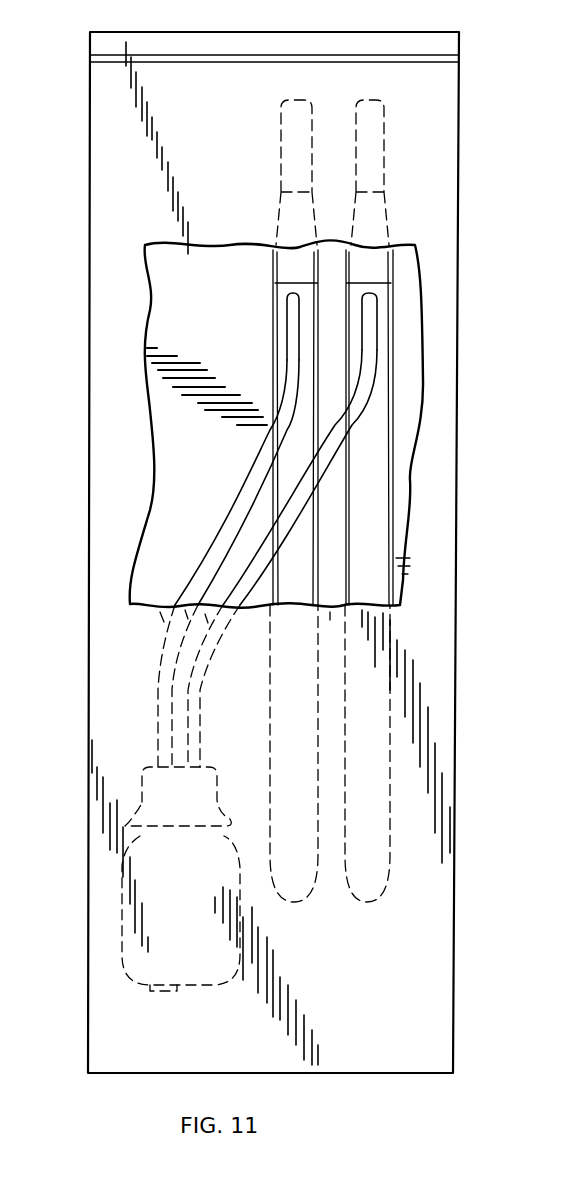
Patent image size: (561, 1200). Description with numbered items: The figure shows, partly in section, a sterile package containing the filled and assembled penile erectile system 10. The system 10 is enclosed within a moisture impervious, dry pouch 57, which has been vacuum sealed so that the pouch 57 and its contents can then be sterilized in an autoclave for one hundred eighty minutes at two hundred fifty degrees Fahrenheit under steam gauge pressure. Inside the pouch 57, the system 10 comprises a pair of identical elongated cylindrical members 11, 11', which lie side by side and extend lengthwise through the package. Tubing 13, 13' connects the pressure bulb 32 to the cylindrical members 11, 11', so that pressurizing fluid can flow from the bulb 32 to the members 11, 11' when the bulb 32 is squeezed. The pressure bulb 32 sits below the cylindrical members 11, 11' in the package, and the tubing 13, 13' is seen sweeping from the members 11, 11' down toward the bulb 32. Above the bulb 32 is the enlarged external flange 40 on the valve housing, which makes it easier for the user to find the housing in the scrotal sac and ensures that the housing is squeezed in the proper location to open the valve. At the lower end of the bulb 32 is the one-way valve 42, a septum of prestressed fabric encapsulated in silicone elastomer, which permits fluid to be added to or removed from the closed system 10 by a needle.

The penile erectile system 10 is at (396, 353).
The elongated cylindrical member 11 is at (418, 501).
The elongated cylindrical member 11' is at (385, 501).
The tubing 13 is at (342, 530).
The tubing 13' is at (228, 530).
The pouch 57 is at (100, 630).
The external flange 40 is at (127, 824).
The pressure bulb 32 is at (137, 900).
The one-way valve 42 is at (175, 984).